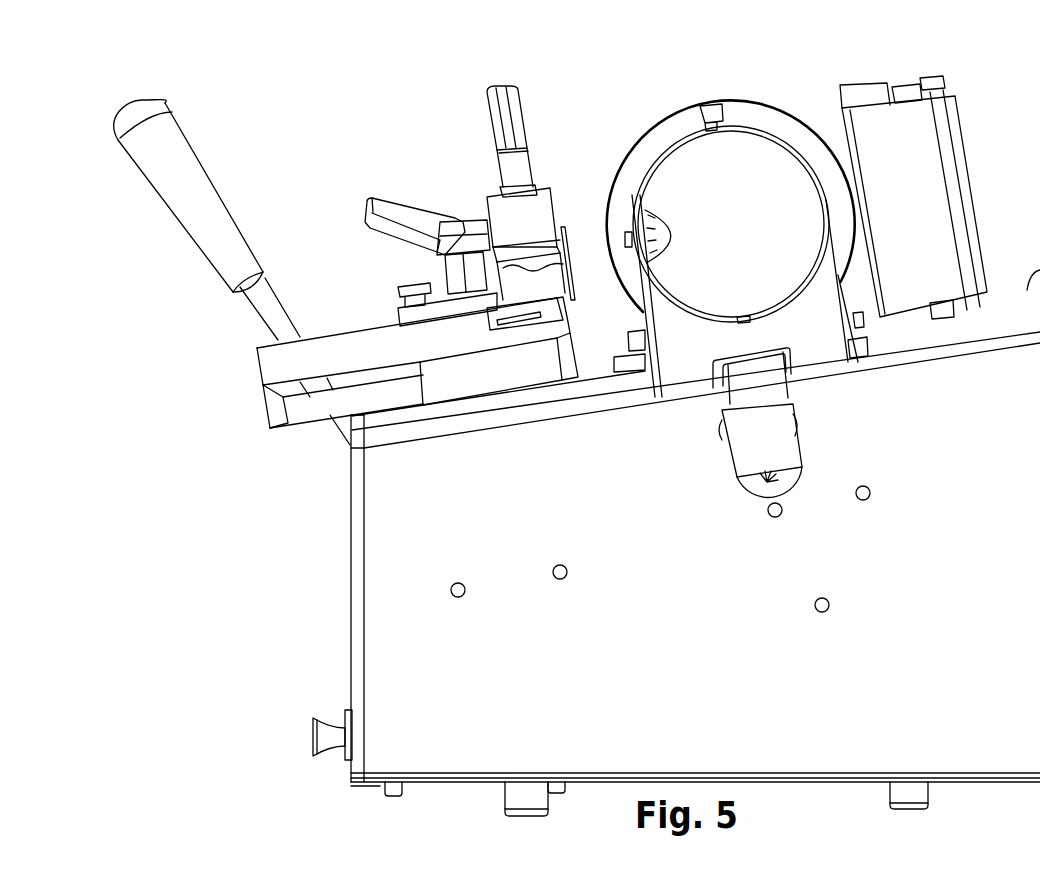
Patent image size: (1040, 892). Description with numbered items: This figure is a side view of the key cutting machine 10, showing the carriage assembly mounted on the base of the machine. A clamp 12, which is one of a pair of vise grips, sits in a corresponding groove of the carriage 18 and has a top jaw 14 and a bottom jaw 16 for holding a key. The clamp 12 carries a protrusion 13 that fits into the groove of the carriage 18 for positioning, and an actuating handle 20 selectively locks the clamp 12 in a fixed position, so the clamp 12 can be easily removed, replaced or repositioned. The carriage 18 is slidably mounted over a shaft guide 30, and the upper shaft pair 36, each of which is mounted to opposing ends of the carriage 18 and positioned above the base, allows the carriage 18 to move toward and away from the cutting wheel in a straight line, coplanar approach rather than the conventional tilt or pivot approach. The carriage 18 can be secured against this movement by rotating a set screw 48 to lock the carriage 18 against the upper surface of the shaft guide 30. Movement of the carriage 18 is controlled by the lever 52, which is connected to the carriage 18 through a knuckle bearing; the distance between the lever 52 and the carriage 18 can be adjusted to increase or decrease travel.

The key cutting machine 10 is at (940, 53).
The clamp 12 is at (548, 172).
The protrusion 13 is at (540, 312).
The top jaw 14 is at (537, 216).
The bottom jaw 16 is at (543, 268).
The carriage 18 is at (294, 359).
The actuating handle 20 is at (393, 212).
The shaft guide 30 is at (467, 381).
The upper shaft pair 36 is at (307, 407).
The set screw 48 is at (407, 290).
The lever 52 is at (165, 135).